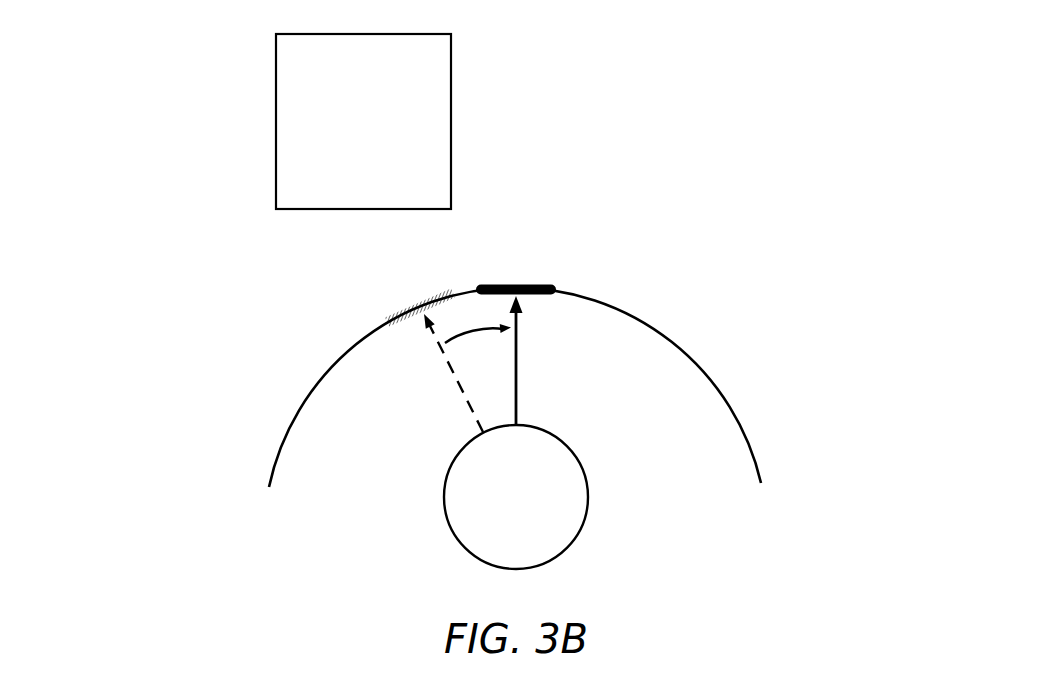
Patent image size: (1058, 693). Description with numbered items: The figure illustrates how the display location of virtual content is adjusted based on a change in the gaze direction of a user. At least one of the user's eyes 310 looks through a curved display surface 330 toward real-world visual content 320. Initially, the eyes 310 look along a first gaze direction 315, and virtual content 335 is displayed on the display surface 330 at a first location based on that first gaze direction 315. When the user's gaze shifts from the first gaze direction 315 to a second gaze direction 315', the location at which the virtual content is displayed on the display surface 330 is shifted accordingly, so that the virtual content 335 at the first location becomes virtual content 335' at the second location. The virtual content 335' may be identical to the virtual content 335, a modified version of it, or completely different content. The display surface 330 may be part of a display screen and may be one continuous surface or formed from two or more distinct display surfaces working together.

The real-world visual content 320 is at (363, 121).
The display surface 330 is at (670, 338).
The virtual content 335 is at (291, 309).
The virtual content 335' is at (626, 252).
The first gaze direction 315 is at (415, 395).
The second gaze direction 315' is at (580, 360).
The eyes 310 is at (516, 497).